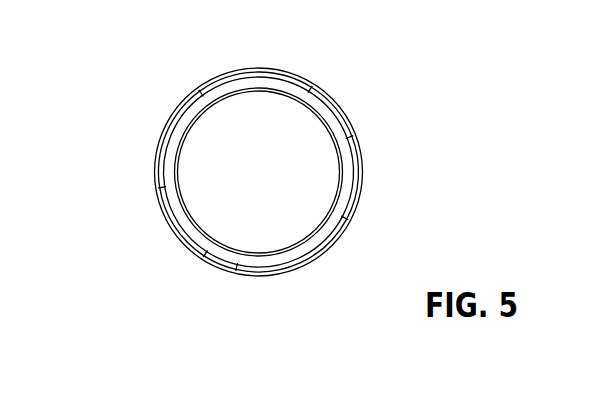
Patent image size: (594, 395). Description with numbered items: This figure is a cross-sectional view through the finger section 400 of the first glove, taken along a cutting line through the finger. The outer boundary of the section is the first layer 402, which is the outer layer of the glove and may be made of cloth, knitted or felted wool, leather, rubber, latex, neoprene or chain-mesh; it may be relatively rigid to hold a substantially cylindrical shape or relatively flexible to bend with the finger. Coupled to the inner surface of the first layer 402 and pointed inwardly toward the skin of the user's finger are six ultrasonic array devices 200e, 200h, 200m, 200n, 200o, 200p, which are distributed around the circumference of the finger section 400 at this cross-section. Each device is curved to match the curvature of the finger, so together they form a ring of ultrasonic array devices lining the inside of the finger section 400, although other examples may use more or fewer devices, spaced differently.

The finger section 400 is at (148, 78).
The first layer 402 is at (336, 102).
The ultrasonic array device 200p is at (164, 138).
The ultrasonic array device 200h is at (261, 77).
The ultrasonic array device 200m is at (353, 137).
The ultrasonic array device 200n is at (348, 217).
The ultrasonic array device 200e is at (236, 268).
The ultrasonic array device 200o is at (172, 222).